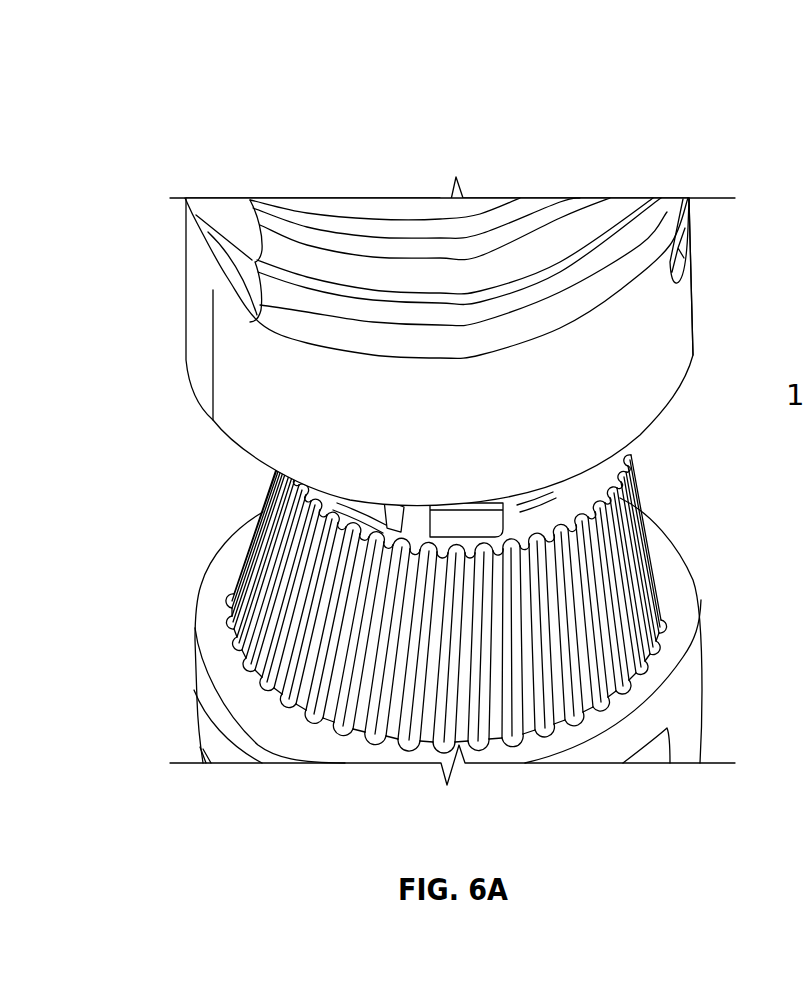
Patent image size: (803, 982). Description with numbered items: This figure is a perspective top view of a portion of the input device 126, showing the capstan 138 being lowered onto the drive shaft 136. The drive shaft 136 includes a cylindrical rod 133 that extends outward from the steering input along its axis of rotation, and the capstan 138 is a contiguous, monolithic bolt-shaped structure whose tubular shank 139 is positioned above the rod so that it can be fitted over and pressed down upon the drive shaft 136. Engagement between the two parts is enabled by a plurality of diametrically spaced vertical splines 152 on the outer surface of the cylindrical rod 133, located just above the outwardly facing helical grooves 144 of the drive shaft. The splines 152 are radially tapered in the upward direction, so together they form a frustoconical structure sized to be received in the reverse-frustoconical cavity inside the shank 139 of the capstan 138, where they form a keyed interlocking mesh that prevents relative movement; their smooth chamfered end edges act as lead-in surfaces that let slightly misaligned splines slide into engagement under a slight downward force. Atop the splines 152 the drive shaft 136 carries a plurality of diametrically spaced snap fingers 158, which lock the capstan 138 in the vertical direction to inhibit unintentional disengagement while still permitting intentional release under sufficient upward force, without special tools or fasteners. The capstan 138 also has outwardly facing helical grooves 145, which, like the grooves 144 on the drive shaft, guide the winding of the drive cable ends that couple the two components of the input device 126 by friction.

The input device 126 is at (575, 57).
The cylindrical rod 133 is at (752, 606).
The drive shaft 136 is at (170, 680).
The capstan 138 is at (172, 384).
The tubular shank 139 is at (693, 303).
The helical grooves 144 is at (700, 735).
The helical grooves 145 is at (648, 215).
The vertical splines 152 is at (633, 550).
The snap fingers 158 is at (300, 512).